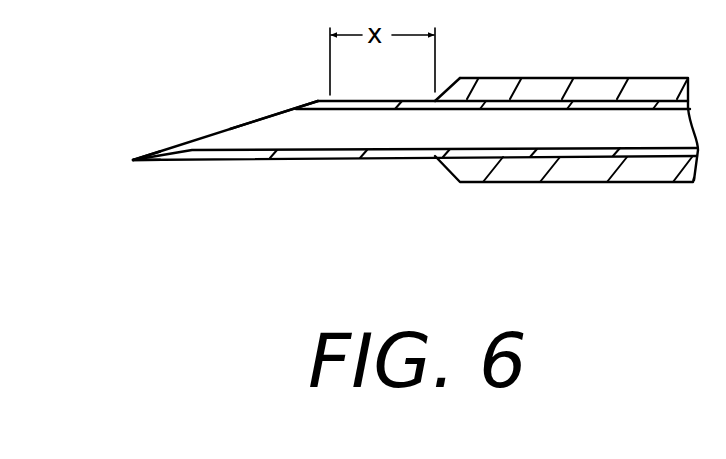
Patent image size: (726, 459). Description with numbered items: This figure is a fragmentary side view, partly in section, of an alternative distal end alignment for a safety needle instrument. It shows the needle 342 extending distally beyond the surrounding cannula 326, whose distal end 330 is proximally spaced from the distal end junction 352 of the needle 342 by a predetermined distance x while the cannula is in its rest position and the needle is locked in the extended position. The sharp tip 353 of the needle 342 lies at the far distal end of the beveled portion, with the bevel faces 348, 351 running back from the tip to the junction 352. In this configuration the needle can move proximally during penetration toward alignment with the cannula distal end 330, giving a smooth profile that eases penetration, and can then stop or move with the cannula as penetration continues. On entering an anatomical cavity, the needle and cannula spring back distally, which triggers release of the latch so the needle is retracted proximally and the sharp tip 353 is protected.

The blade body 326 is at (623, 77).
The distal end of the cannula 330 is at (445, 87).
The needle 342 is at (293, 162).
The cutting edge 348 is at (185, 140).
The upper bevel facet 351 is at (237, 128).
The distal end junction of the needle 352 is at (315, 103).
The sharp tip of the needle 353 is at (133, 160).